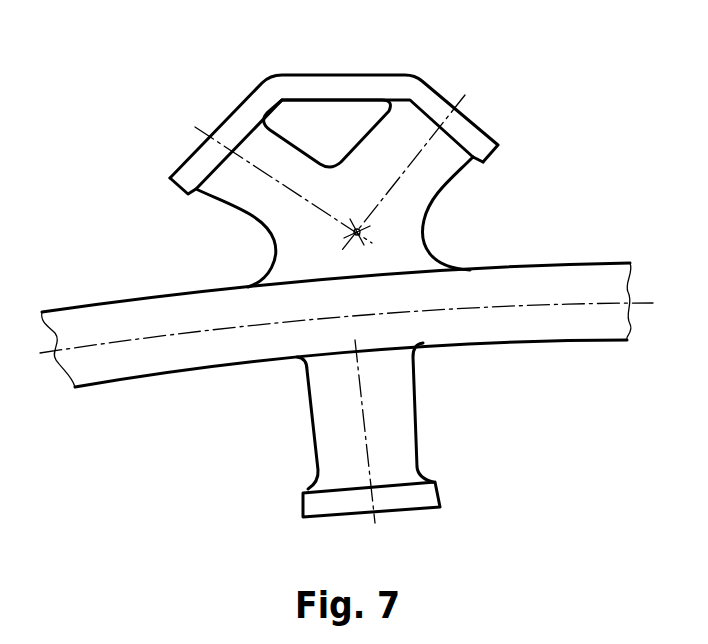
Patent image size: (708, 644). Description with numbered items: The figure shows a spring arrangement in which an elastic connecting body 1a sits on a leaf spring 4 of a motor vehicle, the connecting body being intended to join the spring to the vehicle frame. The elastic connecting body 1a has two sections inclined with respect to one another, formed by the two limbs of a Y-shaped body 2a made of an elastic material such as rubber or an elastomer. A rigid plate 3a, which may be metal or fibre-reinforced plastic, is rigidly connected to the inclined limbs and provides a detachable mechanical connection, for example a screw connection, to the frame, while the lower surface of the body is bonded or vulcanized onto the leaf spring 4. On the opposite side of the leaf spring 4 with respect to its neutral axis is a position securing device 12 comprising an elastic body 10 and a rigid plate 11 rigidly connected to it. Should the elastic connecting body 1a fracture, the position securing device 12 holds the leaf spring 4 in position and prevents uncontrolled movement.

The elastic connecting body 1a is at (255, 83).
The Y-shaped body 2a is at (290, 240).
The rigid plate 3a is at (355, 83).
The leaf spring 4 is at (98, 322).
The elastic body 10 is at (393, 427).
The rigid plate 11 is at (427, 493).
The position securing device 12 is at (430, 431).